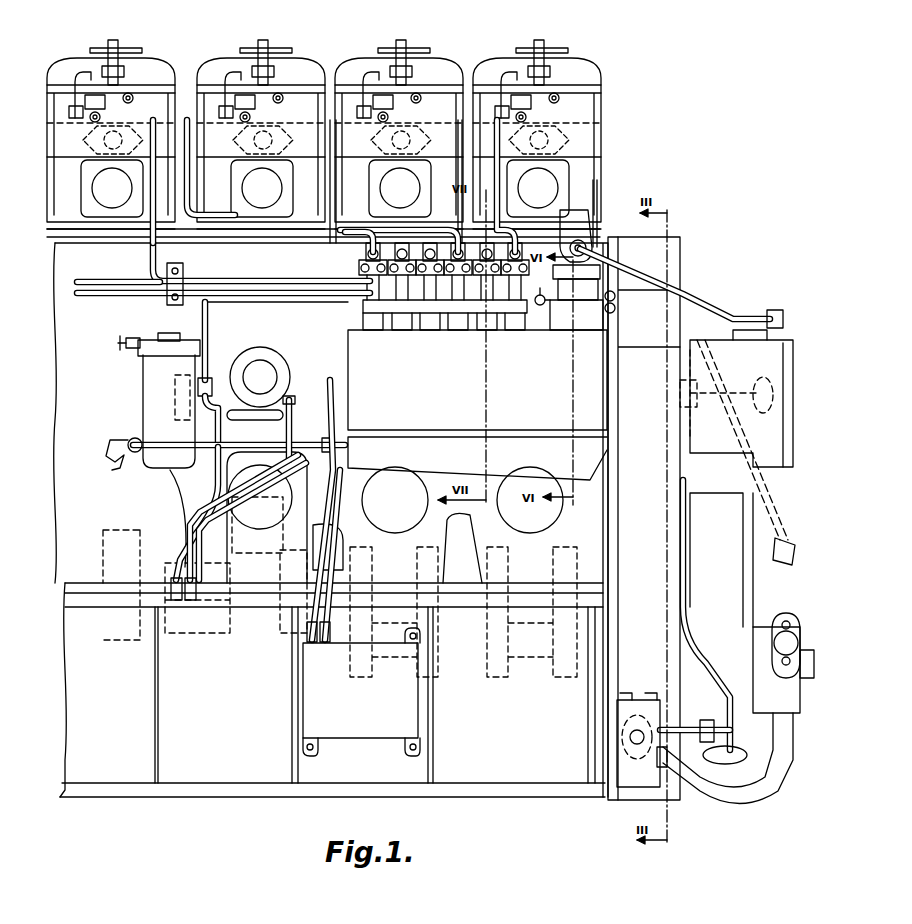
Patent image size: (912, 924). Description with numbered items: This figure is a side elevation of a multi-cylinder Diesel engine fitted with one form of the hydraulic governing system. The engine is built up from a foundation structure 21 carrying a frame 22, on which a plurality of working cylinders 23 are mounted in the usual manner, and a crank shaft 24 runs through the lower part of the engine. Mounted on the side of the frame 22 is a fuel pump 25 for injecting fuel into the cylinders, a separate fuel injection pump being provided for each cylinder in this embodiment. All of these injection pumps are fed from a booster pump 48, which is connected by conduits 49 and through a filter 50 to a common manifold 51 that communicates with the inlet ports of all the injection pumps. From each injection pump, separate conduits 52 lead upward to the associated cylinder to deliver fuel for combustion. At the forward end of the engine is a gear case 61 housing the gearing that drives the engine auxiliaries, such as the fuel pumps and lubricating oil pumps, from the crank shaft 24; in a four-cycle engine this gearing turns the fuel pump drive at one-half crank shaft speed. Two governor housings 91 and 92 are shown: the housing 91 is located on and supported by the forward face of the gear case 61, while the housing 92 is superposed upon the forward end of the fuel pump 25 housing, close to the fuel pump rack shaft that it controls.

The foundation structure 21 is at (203, 735).
The frame 22 is at (93, 556).
The working cylinders 23 is at (310, 58).
The crank shaft 24 is at (500, 677).
The fuel pump 25 is at (395, 499).
The booster pump 48 is at (257, 430).
The conduits 49 is at (285, 302).
The filter 50 is at (143, 395).
The common manifold 51 is at (417, 308).
The conduits 52 is at (493, 188).
The gear case 61 is at (620, 675).
The governor housing 91 is at (740, 357).
The governor housing 92 is at (597, 293).